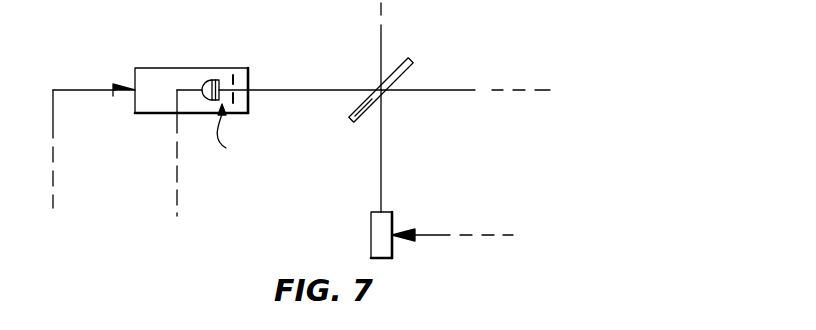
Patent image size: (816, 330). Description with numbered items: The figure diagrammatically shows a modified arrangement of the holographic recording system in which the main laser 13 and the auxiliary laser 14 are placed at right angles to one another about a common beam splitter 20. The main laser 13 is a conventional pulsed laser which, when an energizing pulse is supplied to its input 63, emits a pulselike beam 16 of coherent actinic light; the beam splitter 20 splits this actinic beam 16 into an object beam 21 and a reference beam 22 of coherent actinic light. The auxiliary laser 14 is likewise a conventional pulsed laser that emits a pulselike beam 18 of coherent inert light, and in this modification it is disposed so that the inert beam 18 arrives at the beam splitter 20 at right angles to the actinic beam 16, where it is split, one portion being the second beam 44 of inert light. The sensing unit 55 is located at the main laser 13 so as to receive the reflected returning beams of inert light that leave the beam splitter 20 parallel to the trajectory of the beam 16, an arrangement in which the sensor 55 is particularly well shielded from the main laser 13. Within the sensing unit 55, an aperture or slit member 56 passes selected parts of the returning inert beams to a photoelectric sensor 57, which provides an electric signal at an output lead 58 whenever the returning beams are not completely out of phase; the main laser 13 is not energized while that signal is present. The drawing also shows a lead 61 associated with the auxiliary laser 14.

The main laser 13 is at (165, 73).
The photoelectric sensor 57 is at (207, 81).
The aperture or slit member 56 is at (240, 83).
The input of the main laser 63 is at (53, 117).
The output lead 58 is at (171, 144).
The sensing unit 55 is at (233, 132).
The pulselike beam of coherent actinic light 16 is at (345, 72).
The object beam 21 is at (473, 92).
The second beam of inert light 44 is at (378, 38).
The reference beam 22 is at (383, 60).
The beam splitter 20 is at (354, 118).
The pulselike beam of coherent inert light 18 is at (381, 172).
The auxiliary laser 14 is at (371, 222).
The output signal line 61 is at (437, 235).